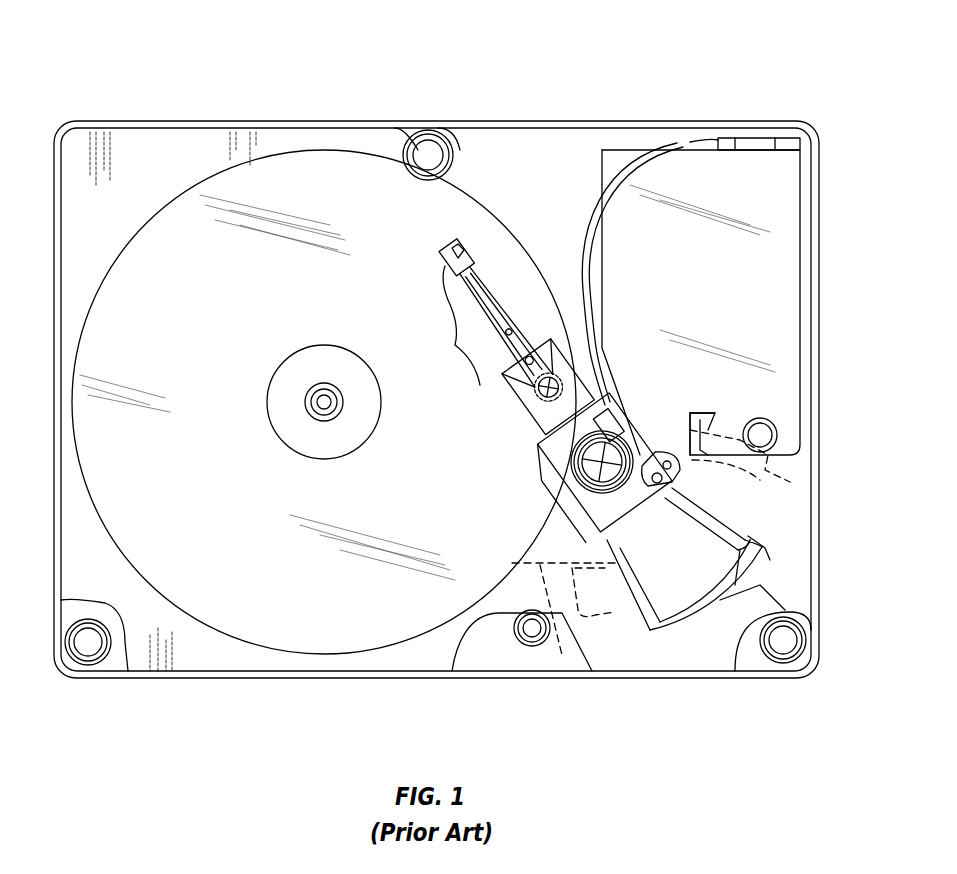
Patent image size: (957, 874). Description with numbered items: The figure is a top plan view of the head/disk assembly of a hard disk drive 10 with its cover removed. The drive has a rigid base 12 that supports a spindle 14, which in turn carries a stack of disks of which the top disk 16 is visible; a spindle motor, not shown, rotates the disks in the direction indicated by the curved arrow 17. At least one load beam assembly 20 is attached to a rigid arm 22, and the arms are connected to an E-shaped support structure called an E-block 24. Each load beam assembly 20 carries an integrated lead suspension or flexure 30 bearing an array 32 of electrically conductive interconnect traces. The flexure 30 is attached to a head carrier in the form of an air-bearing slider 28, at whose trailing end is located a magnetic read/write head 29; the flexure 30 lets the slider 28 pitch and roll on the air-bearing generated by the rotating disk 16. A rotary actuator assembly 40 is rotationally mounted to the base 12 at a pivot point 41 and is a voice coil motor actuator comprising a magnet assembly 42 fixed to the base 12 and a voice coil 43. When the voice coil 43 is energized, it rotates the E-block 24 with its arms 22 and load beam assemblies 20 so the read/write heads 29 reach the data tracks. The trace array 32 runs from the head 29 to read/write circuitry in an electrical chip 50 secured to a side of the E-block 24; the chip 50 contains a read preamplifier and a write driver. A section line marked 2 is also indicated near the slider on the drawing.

The hard disk drive 10 is at (130, 58).
The rigid base 12 is at (210, 680).
The spindle 14 is at (325, 346).
The top disk 16 is at (318, 632).
The curved arrow 17 is at (154, 318).
The load beam assembly 20 is at (449, 325).
The rigid arm 22 is at (528, 394).
The E-block 24 is at (552, 450).
The air-bearing slider 28 is at (462, 262).
The read/write head 29 is at (449, 258).
The flexure 30 is at (468, 270).
The array of interconnect traces 32 is at (492, 306).
The rotary actuator assembly 40 is at (553, 526).
The pivot point 41 is at (596, 466).
The magnet assembly 42 is at (703, 463).
The voice coil 43 is at (740, 550).
The electrical module or chip 50 is at (645, 440).
The section line for FIG. 2 is at (398, 262).